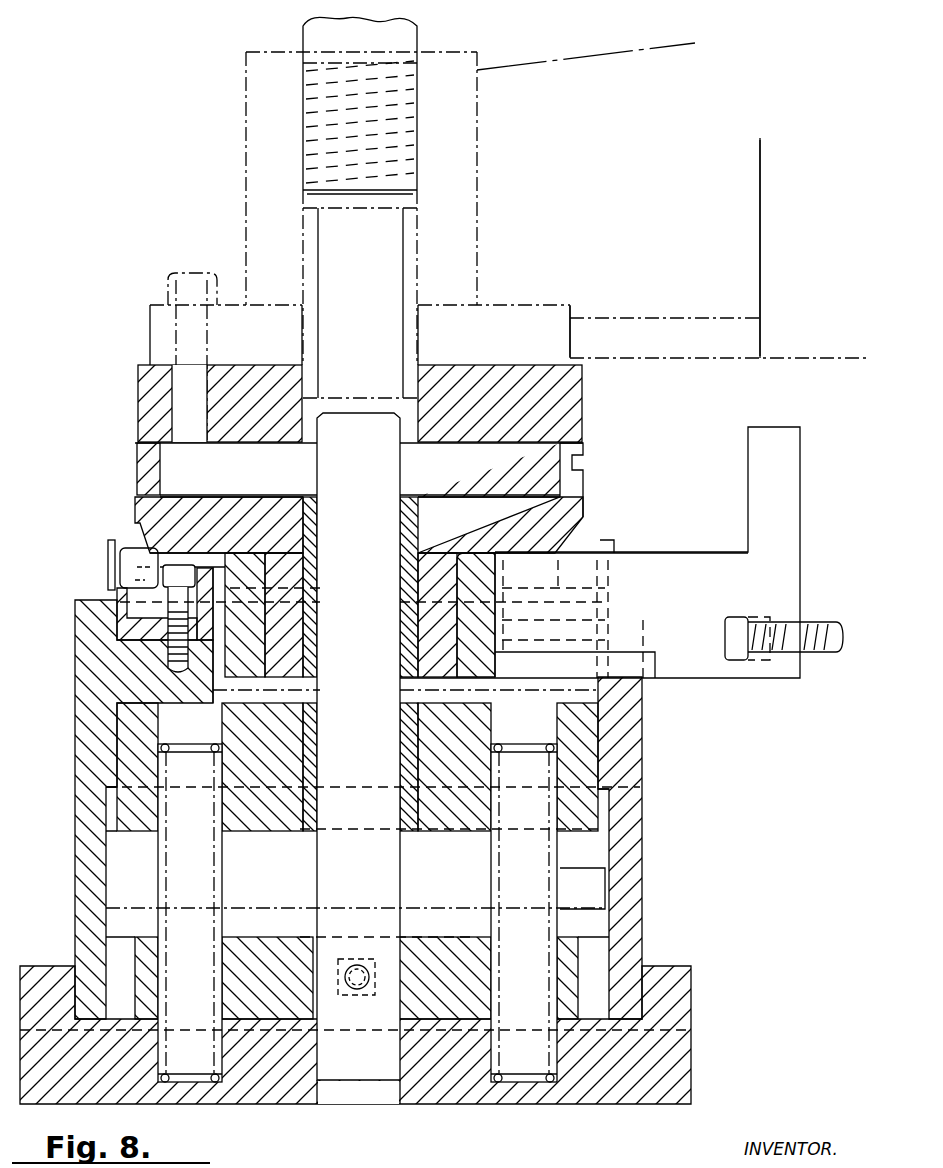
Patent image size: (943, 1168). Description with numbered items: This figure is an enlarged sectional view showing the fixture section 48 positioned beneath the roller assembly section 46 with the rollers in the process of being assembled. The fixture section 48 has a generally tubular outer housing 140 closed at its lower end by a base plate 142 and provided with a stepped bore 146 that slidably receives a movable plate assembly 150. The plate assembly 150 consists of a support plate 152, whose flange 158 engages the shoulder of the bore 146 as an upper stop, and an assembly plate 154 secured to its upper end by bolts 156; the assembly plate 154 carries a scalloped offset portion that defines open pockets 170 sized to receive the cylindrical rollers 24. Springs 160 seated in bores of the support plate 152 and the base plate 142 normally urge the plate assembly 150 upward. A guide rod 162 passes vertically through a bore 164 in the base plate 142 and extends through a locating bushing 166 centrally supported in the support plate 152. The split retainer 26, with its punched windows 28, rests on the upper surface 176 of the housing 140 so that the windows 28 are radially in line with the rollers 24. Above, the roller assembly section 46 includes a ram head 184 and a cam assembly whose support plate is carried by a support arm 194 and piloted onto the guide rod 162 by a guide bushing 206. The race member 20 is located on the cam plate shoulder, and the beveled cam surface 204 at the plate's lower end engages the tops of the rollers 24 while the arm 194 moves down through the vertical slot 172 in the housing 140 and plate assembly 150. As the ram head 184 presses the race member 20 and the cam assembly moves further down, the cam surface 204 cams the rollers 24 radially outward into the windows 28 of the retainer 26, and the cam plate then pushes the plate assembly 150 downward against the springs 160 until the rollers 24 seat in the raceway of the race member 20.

The ram head 184 is at (143, 388).
The roller assembly section 46 is at (666, 413).
The race member 20 is at (578, 470).
The cylindrical rollers 24 is at (359, 498).
The open pockets 170 is at (360, 513).
The guide bushing 206 is at (425, 521).
The cam surface 204 is at (600, 526).
The support arm 194 is at (710, 570).
The vertical slot 172 is at (640, 630).
The split retainer 26 is at (104, 530).
The bolts 156 is at (177, 577).
The windows 28 is at (113, 590).
The assembly plate 154 is at (100, 637).
The upper surface 176 is at (107, 602).
The movable plate assembly 150 is at (607, 770).
The locating bushing 166 is at (398, 828).
The outer housing 140 is at (655, 811).
The base plate 142 is at (429, 1082).
The stepped bore 146 is at (600, 919).
The fixture section 48 is at (661, 943).
The flange 158 is at (612, 831).
The support plate 152 is at (580, 828).
The springs 160 is at (205, 756).
The guide rod 162 is at (322, 852).
The bore 164 is at (394, 972).